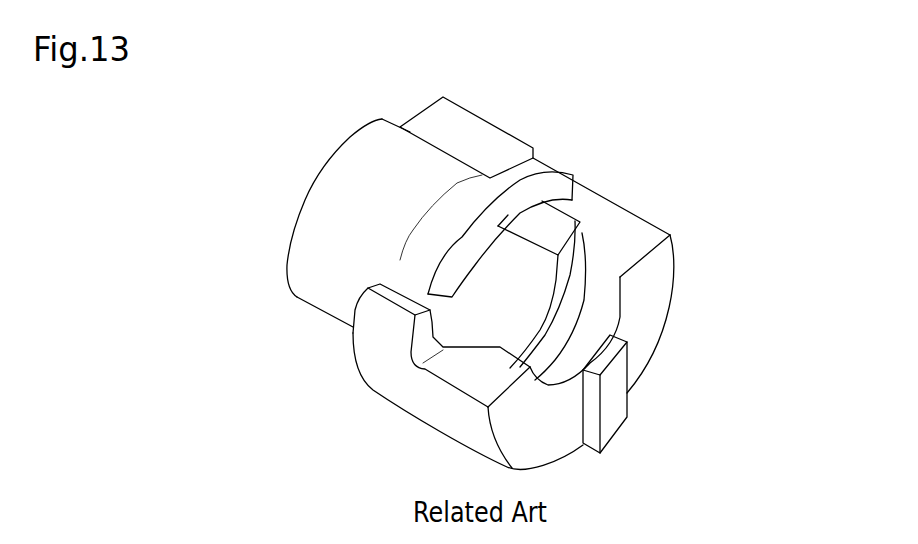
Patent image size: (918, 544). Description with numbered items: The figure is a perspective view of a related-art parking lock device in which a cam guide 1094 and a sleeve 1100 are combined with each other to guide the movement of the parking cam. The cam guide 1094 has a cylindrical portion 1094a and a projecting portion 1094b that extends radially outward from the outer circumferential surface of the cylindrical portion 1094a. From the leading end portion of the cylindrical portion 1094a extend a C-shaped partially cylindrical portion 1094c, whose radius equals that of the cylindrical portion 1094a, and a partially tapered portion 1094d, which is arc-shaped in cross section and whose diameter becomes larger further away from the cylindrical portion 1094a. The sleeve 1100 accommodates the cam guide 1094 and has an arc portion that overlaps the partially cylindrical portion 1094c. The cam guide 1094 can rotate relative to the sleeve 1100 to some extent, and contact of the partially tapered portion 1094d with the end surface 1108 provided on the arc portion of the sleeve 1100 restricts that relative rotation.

The cam guide 1094 is at (362, 104).
The cylindrical portion 1094a is at (335, 178).
The projecting portion 1094b is at (470, 130).
The partially cylindrical portion 1094c is at (563, 235).
The partially tapered portion 1094d is at (565, 172).
The sleeve 1100 is at (679, 295).
The end surface 1108 is at (368, 282).